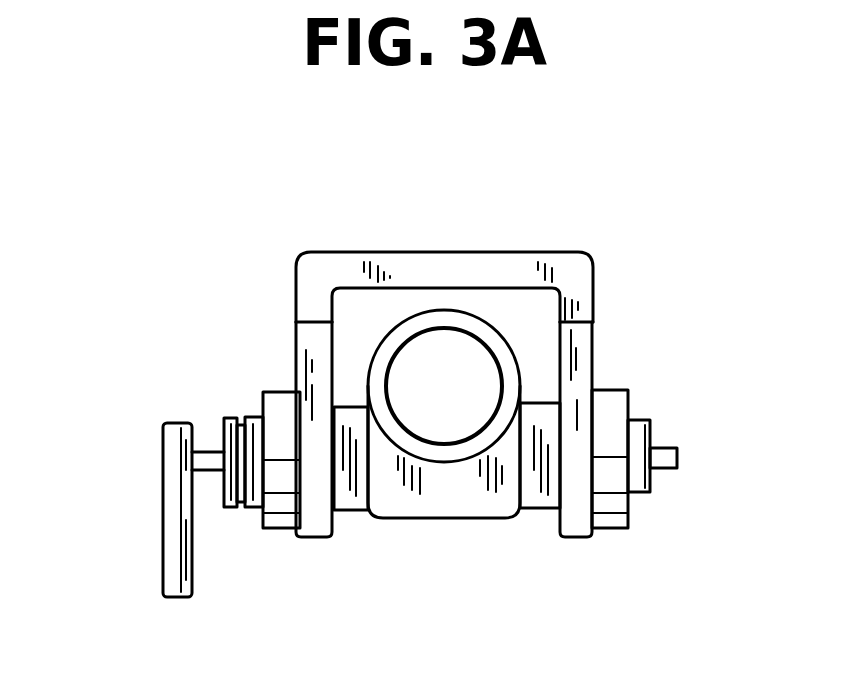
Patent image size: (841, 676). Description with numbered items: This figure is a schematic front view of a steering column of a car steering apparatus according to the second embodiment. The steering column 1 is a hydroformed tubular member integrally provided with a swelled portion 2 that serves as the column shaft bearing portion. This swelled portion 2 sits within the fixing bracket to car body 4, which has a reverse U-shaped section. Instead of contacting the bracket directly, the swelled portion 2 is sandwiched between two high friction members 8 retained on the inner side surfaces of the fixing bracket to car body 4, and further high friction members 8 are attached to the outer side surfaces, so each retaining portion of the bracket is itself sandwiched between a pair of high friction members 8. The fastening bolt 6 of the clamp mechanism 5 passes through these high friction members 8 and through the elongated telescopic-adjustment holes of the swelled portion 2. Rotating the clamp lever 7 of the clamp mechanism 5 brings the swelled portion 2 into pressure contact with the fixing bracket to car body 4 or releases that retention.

The steering column 1 is at (417, 308).
The swelled portion 2 is at (443, 520).
The fixing bracket to car body 4 is at (456, 252).
The clamp mechanism 5 is at (233, 418).
The fastening bolt 6 is at (658, 470).
The clamp lever 7 is at (167, 540).
The high friction members 8 is at (277, 530).